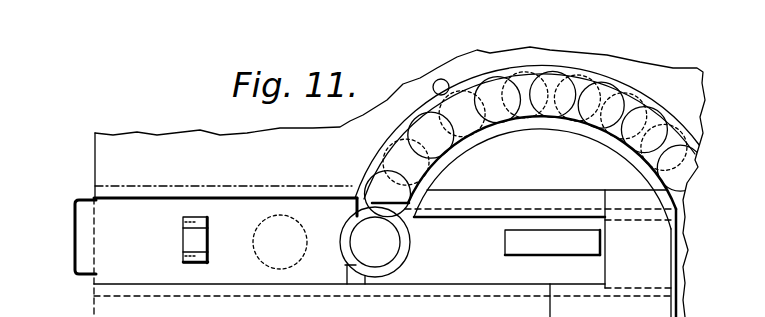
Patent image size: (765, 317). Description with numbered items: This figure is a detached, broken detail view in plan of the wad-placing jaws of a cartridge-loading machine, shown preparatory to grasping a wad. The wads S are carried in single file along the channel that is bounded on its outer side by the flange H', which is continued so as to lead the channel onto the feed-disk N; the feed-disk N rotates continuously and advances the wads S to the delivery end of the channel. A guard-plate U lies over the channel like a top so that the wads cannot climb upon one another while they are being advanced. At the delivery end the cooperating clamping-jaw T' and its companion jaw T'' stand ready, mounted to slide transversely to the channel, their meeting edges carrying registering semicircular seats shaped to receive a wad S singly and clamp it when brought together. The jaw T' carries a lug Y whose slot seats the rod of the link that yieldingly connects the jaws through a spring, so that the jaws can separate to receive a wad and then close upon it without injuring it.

The frame tube section T'' is at (390, 182).
The clamping-jaw T' is at (524, 253).
The lug Y is at (203, 219).
The wads S is at (375, 245).
The balls S' is at (534, 119).
The flange H' is at (527, 116).
The feed-disk N is at (542, 172).
The guard-plate U is at (601, 105).